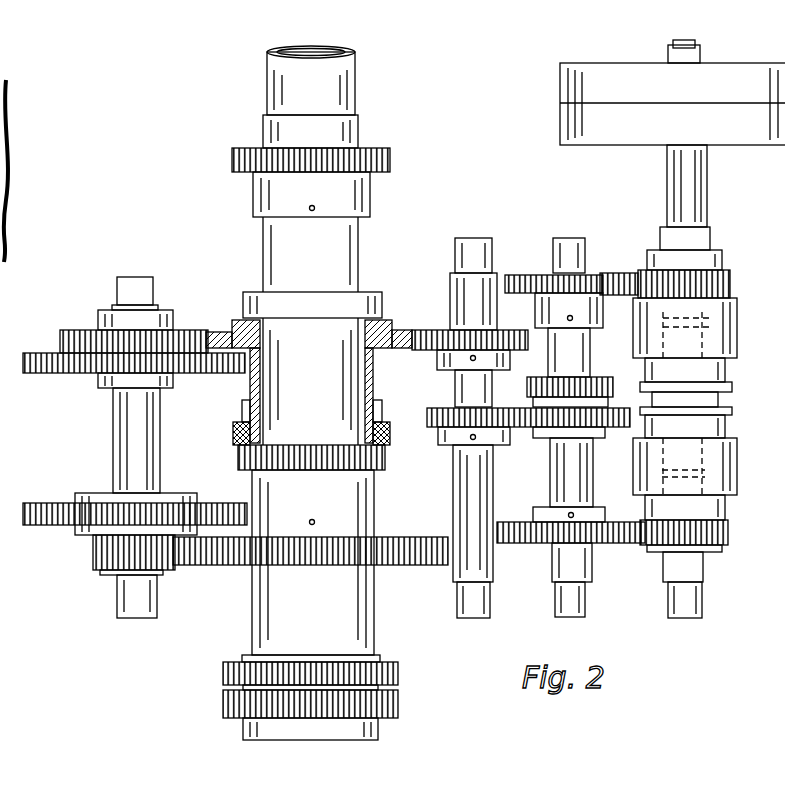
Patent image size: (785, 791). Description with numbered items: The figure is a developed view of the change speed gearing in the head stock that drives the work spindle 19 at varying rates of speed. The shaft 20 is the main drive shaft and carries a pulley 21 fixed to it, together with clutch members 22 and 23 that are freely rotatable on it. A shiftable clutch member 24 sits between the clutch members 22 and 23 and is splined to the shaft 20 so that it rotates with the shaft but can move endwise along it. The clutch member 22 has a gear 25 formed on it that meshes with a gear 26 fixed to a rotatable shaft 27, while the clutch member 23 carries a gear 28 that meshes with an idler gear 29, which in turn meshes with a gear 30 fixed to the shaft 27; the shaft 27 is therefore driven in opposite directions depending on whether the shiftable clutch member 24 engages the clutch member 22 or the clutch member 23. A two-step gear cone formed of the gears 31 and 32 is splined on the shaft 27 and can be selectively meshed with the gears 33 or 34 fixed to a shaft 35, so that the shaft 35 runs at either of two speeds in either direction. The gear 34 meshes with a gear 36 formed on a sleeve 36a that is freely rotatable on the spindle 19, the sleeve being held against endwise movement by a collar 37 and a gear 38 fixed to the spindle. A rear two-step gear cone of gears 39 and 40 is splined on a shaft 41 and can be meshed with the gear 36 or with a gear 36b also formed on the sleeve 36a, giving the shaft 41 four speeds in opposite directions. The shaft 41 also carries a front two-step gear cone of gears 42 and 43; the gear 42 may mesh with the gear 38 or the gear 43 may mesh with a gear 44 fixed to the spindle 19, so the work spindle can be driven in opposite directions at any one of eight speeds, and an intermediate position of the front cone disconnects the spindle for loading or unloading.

The spindle 19 is at (362, 612).
The shaft 20 is at (697, 200).
The pulley 21 is at (726, 72).
The clutch member 22 is at (735, 462).
The clutch member 23 is at (737, 325).
The shiftable clutch member 24 is at (722, 372).
The gear 25 is at (730, 535).
The gear 26 is at (528, 542).
The shaft 27 is at (585, 553).
The gear 28 is at (730, 283).
The idler gear 29 is at (613, 275).
The gear 30 is at (525, 285).
The gear 31 is at (538, 425).
The gear 32 is at (600, 386).
The gear 33 is at (430, 422).
The gear 34 is at (440, 338).
The shaft 35 is at (458, 488).
The gear 36 is at (392, 350).
The sleeve 36a is at (252, 385).
The gear 36b is at (247, 417).
The collar 37 is at (380, 293).
The gear 38 is at (240, 458).
The gear 39 is at (80, 335).
The gear 40 is at (68, 365).
The shaft 41 is at (116, 425).
The gear 42 is at (50, 525).
The gear 43 is at (98, 555).
The gear 44 is at (228, 560).